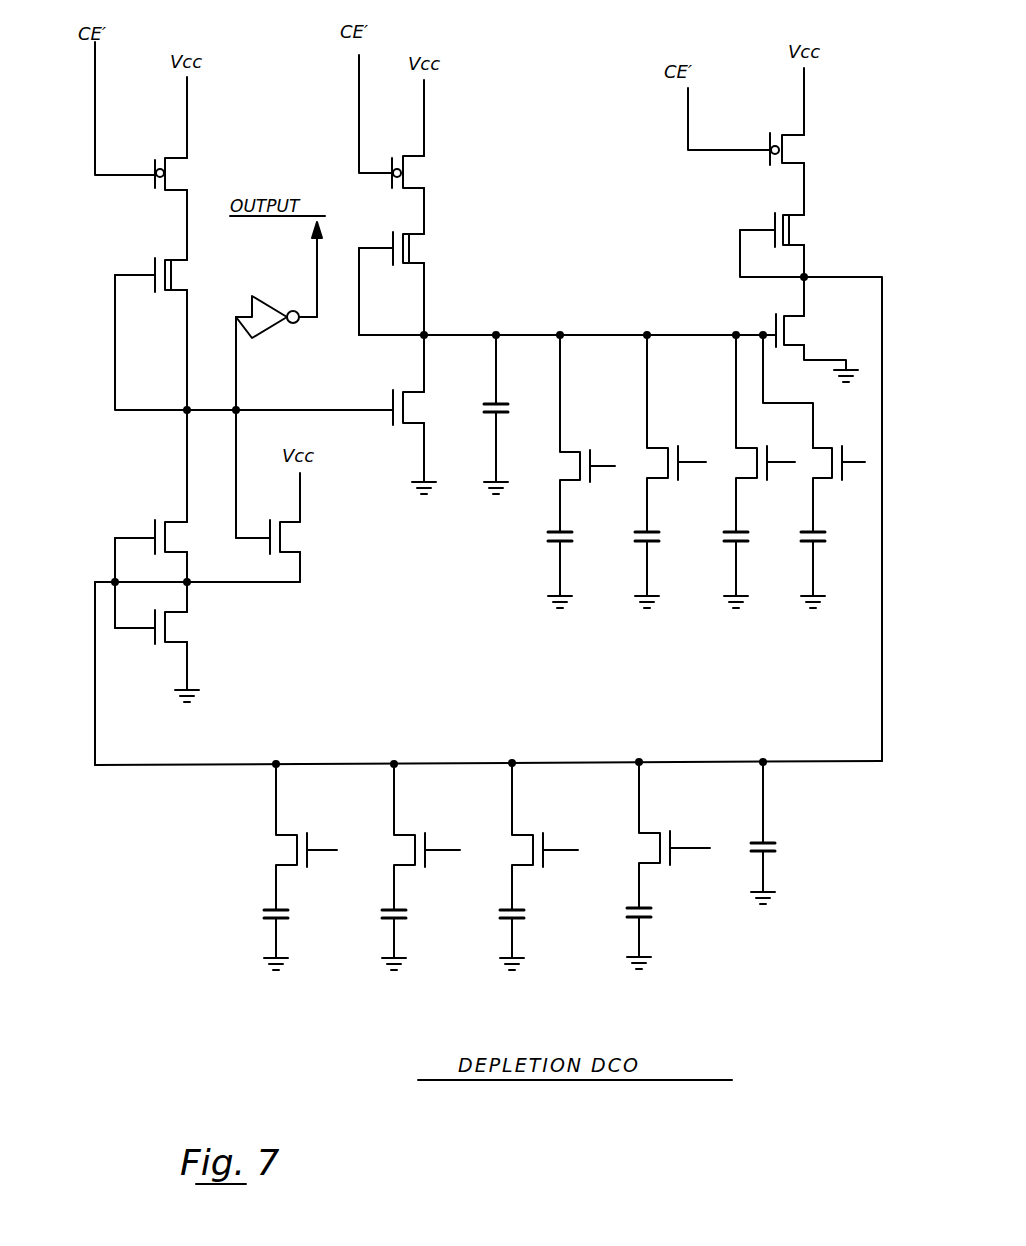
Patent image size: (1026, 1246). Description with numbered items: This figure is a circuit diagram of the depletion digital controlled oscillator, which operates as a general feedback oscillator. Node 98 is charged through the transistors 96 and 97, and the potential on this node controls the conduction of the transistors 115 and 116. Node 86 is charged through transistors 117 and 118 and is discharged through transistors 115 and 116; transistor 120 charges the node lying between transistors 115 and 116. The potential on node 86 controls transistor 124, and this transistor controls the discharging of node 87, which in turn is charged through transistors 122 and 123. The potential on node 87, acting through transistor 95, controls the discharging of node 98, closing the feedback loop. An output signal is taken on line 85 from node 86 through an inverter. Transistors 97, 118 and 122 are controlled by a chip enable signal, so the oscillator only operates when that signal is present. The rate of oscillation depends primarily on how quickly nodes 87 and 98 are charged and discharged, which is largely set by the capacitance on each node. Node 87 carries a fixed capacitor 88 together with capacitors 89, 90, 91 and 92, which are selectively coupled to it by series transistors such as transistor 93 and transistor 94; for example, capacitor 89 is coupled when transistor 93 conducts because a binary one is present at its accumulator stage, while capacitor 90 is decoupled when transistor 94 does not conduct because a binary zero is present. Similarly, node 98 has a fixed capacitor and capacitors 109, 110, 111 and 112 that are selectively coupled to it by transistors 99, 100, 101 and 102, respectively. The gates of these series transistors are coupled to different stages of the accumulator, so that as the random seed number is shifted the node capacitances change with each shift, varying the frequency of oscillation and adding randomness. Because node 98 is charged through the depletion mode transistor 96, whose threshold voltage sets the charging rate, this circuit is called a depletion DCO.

The output line 85 is at (317, 253).
The node 86 is at (337, 410).
The node 87 is at (598, 335).
The fixed capacitor 88 is at (490, 415).
The capacitor 89 is at (565, 548).
The capacitor 90 is at (655, 545).
The capacitor 91 is at (745, 545).
The capacitor 92 is at (822, 545).
The transistor 93 is at (578, 458).
The transistor 94 is at (665, 456).
The transistor 95 is at (795, 331).
The depletion mode transistor 96 is at (797, 229).
The transistor 97 is at (797, 146).
The node 98 is at (750, 760).
The transistor 99 is at (288, 844).
The transistor 100 is at (408, 844).
The transistor 101 is at (526, 844).
The transistor 102 is at (655, 842).
The capacitor 109 is at (268, 922).
The capacitor 110 is at (386, 922).
The capacitor 111 is at (504, 922).
The capacitor 112 is at (635, 922).
The transistor 115 is at (175, 626).
The transistor 116 is at (175, 535).
The transistor 117 is at (173, 278).
The transistor 118 is at (172, 178).
The transistor 120 is at (288, 538).
The transistor 122 is at (410, 180).
The transistor 123 is at (415, 253).
The transistor 124 is at (412, 412).